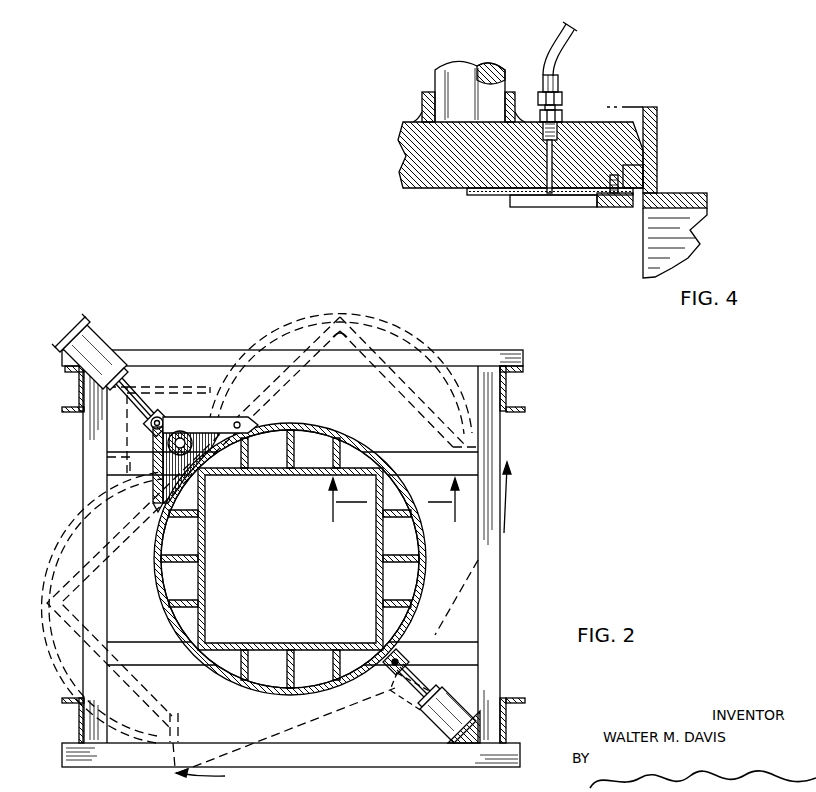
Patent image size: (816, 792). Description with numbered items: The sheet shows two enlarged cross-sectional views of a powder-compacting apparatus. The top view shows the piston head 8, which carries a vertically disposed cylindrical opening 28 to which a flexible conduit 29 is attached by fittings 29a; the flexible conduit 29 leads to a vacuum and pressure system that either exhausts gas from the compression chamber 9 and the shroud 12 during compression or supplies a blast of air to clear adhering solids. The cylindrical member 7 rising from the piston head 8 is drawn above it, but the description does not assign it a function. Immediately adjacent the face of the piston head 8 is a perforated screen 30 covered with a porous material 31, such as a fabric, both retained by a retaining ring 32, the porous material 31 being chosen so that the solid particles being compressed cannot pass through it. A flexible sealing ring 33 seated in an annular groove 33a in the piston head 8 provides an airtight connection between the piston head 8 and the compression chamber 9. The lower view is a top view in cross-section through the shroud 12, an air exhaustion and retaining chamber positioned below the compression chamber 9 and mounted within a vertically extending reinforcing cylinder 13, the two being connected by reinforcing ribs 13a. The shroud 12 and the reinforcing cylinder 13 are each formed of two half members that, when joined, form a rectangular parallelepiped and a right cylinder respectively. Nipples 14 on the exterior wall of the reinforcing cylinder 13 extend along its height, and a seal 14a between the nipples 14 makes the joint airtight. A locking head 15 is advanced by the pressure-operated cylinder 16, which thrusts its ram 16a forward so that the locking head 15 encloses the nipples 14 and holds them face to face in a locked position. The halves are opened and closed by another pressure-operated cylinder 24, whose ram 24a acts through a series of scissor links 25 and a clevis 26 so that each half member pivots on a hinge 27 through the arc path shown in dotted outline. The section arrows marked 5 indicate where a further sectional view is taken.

In FIG. 4, the pipe 7 is at (477, 67).
In FIG. 4, the piston head 8 is at (408, 188).
In FIG. 4, the compression chamber 9 is at (657, 107).
In FIG. 4, the cylindrical opening 28 is at (524, 201).
In FIG. 4, the flexible conduit 29 is at (565, 50).
In FIG. 4, the fittings 29a is at (563, 106).
In FIG. 4, the screen 30 is at (470, 193).
In FIG. 4, the porous material 31 is at (497, 200).
In FIG. 4, the retaining ring 32 is at (627, 206).
In FIG. 4, the flexible sealing ring 33 is at (620, 177).
In FIG. 4, the annular groove 33a is at (636, 157).
In FIG. 2, the shroud 12 is at (377, 573).
In FIG. 2, the reinforcing cylinder 13 is at (332, 427).
In FIG. 2, the reinforcing ribs 13a is at (300, 428).
In FIG. 2, the nipples 14 is at (418, 634).
In FIG. 2, the seal 14a is at (389, 685).
In FIG. 2, the locking head 15 is at (426, 658).
In FIG. 2, the pressure-operated cylinder 16 is at (455, 703).
In FIG. 2, the ram 16a is at (447, 673).
In FIG. 2, the pressure-operated cylinder 24 is at (98, 336).
In FIG. 2, the ram 24a is at (132, 410).
In FIG. 2, the scissor links 25 is at (184, 427).
In FIG. 2, the clevis 26 is at (148, 427).
In FIG. 2, the hinge 27 is at (192, 436).
In FIG. 2, the section line 5 is at (393, 514).